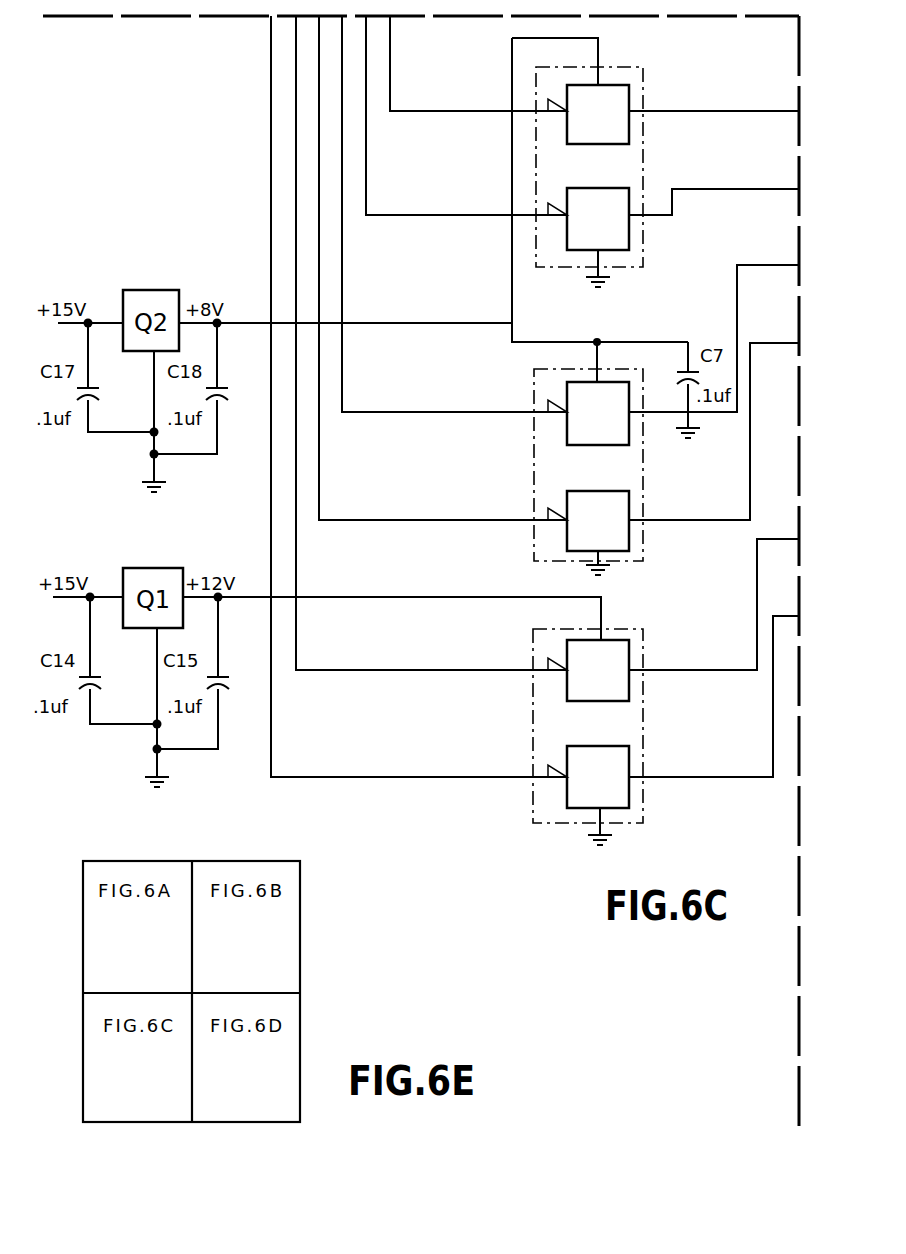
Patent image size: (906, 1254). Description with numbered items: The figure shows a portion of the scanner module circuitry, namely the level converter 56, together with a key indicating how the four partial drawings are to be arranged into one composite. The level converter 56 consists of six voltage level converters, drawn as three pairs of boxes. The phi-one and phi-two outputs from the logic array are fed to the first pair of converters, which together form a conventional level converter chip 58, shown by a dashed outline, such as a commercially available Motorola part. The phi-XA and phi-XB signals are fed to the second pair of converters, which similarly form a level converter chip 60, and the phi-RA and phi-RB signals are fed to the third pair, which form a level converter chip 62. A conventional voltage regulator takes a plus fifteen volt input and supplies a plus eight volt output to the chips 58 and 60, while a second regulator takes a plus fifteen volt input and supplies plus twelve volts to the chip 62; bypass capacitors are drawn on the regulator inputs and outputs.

The level converter 56 is at (262, 242).
The level converter chip 58 is at (632, 68).
The level converter chip 60 is at (643, 491).
The level converter chip 62 is at (645, 656).